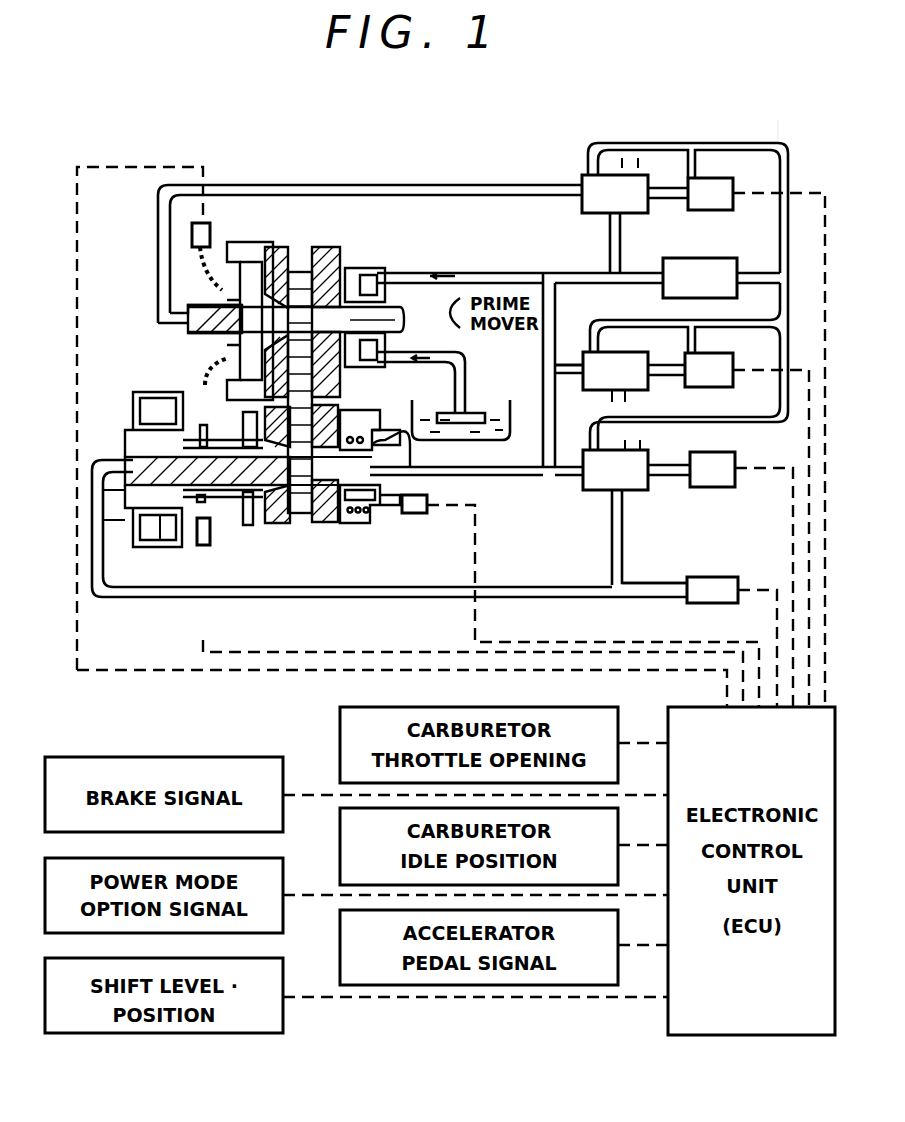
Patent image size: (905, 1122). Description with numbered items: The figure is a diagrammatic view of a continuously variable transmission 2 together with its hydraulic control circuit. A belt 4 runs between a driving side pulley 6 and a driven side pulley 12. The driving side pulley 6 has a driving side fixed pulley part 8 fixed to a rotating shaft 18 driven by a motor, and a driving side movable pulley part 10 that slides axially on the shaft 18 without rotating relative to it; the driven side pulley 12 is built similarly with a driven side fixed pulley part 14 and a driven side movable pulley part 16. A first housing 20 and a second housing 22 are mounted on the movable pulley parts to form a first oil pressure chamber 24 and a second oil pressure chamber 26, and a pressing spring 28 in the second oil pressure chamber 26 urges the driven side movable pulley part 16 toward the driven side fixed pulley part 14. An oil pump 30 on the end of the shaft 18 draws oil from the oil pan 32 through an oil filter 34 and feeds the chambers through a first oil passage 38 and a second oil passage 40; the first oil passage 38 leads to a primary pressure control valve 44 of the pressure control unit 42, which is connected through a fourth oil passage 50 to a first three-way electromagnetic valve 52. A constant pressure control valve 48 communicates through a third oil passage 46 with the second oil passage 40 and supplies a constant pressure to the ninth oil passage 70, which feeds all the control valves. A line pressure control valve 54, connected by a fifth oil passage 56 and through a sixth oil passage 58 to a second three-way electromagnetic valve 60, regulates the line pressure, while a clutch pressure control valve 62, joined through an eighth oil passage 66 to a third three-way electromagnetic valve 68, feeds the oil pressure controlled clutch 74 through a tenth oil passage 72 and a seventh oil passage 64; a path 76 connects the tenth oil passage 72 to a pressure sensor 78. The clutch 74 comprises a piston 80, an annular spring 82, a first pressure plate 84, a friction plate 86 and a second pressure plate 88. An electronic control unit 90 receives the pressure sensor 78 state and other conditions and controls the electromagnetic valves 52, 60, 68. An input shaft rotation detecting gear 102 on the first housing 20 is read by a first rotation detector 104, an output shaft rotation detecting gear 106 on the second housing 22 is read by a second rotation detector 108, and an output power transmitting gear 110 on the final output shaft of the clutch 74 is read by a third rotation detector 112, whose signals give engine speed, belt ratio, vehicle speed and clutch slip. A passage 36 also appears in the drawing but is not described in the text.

The continuously variable transmission 2 is at (732, 108).
The belt 4 is at (300, 262).
The driving side pulley 6 is at (160, 335).
The driving side fixed pulley part 8 is at (340, 262).
The driving side movable pulley part 10 is at (280, 258).
The driven side pulley 12 is at (400, 525).
The driven side fixed pulley part 14 is at (278, 520).
The driven side movable pulley part 16 is at (320, 518).
The rotating shaft 18 is at (398, 318).
The first housing 20 is at (240, 380).
The second housing 22 is at (362, 420).
The first oil pressure chamber 24 is at (238, 358).
The second oil pressure chamber 26 is at (350, 525).
The pressing spring 28 is at (358, 518).
The oil pump 30 is at (372, 270).
The oil pan 32 is at (488, 445).
The oil filter 34 is at (478, 410).
The hydraulic conduit 36 is at (388, 182).
The first oil passage 38 is at (492, 192).
The second oil passage 40 is at (548, 272).
The pressure control unit 42 is at (560, 145).
The primary pressure control valve 44 is at (615, 194).
The third oil passage 46 is at (637, 285).
The constant pressure control valve 48 is at (700, 278).
The fourth oil passage 50 is at (665, 202).
The first three-way electromagnetic valve 52 is at (710, 194).
The line pressure control valve 54 is at (615, 383).
The fifth oil passage 56 is at (573, 376).
The sixth oil passage 58 is at (670, 378).
The second three-way electromagnetic valve 60 is at (709, 370).
The clutch pressure control valve 62 is at (615, 459).
The seventh oil passage 64 is at (612, 552).
The eighth oil passage 66 is at (670, 478).
The third three-way electromagnetic valve 68 is at (712, 469).
The ninth oil passage 70 is at (770, 142).
The tenth oil passage 72 is at (395, 590).
The oil pressure controlled clutch 74 is at (118, 405).
The path 76 is at (645, 583).
The pressure sensor 78 is at (722, 577).
The piston 80 is at (135, 492).
The annular spring 82 is at (140, 522).
The first pressure plate 84 is at (145, 540).
The friction plate 86 is at (170, 545).
The second pressure plate 88 is at (182, 545).
The electronic control unit 90 is at (760, 1036).
The input shaft rotation detecting gear 102 is at (205, 272).
The first rotation detector 104 is at (190, 235).
The output shaft rotation detecting gear 106 is at (405, 445).
The second rotation detector 108 is at (428, 506).
The output power transmitting gear 110 is at (203, 372).
The third rotation detector 112 is at (210, 545).